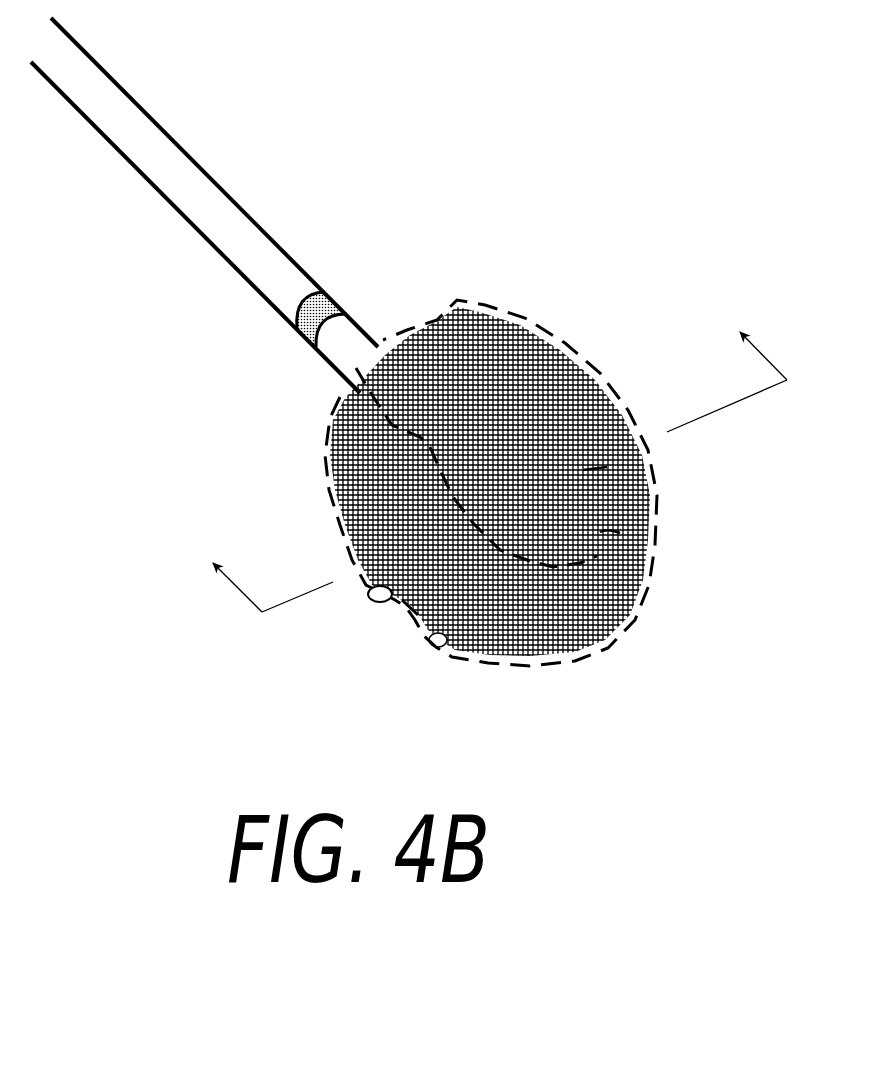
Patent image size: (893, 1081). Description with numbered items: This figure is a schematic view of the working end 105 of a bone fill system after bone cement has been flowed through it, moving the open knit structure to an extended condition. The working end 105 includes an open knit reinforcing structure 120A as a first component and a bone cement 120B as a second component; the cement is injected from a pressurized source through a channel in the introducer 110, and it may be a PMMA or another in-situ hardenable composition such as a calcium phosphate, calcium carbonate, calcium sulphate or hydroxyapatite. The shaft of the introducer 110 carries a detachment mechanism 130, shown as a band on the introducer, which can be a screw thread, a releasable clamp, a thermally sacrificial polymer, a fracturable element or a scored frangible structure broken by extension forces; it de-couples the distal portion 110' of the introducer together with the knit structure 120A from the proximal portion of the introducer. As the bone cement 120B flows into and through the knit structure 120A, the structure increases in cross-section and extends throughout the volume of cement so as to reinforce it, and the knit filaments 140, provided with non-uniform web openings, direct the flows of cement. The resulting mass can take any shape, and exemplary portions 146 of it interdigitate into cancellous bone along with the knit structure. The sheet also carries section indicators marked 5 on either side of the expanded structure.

The working end 105 is at (663, 180).
The introducer 110 is at (204, 205).
The distal portion of the introducer 110' is at (411, 465).
The open knit reinforcing structure 120A is at (535, 317).
The bone cement 120B is at (519, 453).
The detachment mechanism 130 is at (330, 288).
The knit filaments 140 is at (418, 612).
The exemplary portions 146 is at (593, 527).
The section line 5 is at (490, 454).